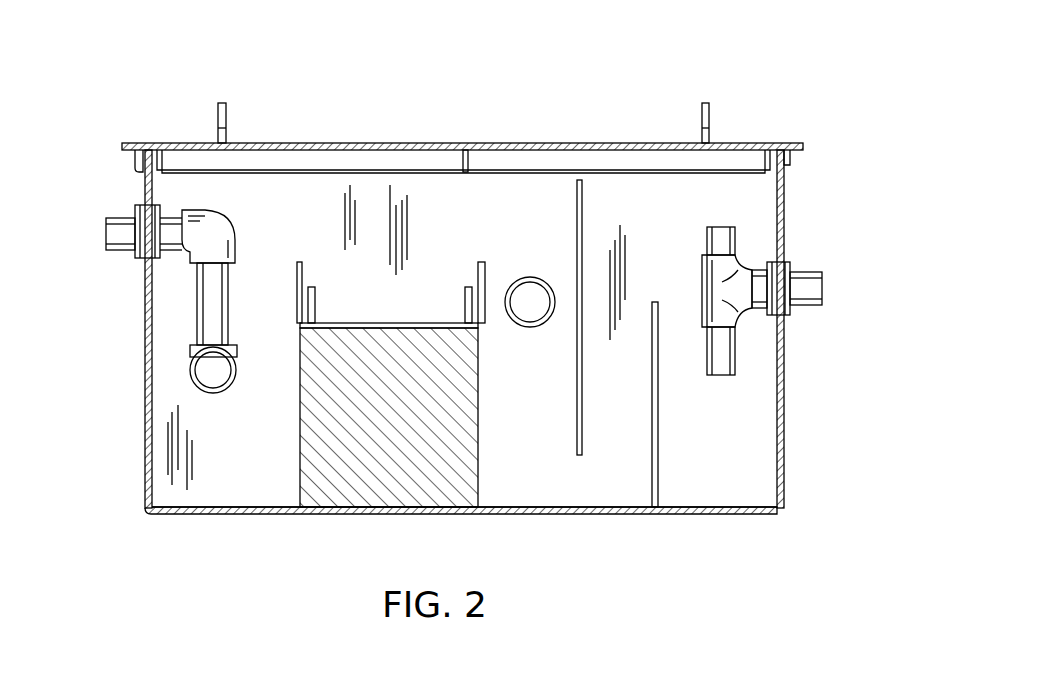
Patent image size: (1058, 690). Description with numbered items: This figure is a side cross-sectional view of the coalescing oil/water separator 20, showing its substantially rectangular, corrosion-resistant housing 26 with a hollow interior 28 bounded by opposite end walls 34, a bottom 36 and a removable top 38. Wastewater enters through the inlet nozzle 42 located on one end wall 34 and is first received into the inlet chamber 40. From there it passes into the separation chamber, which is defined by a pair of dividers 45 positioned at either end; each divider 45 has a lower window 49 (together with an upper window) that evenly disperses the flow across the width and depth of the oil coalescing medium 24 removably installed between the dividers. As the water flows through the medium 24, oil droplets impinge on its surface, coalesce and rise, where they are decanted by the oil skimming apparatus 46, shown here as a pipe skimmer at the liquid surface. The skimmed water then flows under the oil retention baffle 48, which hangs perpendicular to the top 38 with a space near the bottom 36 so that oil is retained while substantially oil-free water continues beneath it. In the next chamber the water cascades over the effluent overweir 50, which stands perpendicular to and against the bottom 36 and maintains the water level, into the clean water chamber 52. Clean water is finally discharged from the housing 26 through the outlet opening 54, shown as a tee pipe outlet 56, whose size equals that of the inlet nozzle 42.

The coalescing oil/water separator 20 is at (606, 88).
The oil coalescing medium 24 is at (388, 323).
The housing 26 is at (355, 137).
The hollow interior 28 is at (372, 212).
The end wall 34 is at (143, 365).
The bottom 36 is at (395, 515).
The removable top 38 is at (608, 140).
The inlet chamber 40 is at (195, 197).
The inlet nozzle 42 is at (135, 208).
The divider 45 is at (300, 262).
The oil skimming apparatus 46 is at (535, 290).
The oil retention baffle 48 is at (573, 195).
The lower window 49 is at (485, 268).
The effluent overweir 50 is at (655, 300).
The clean water chamber 52 is at (735, 425).
The outlet opening 54 is at (787, 258).
The tee pipe outlet 56 is at (722, 242).